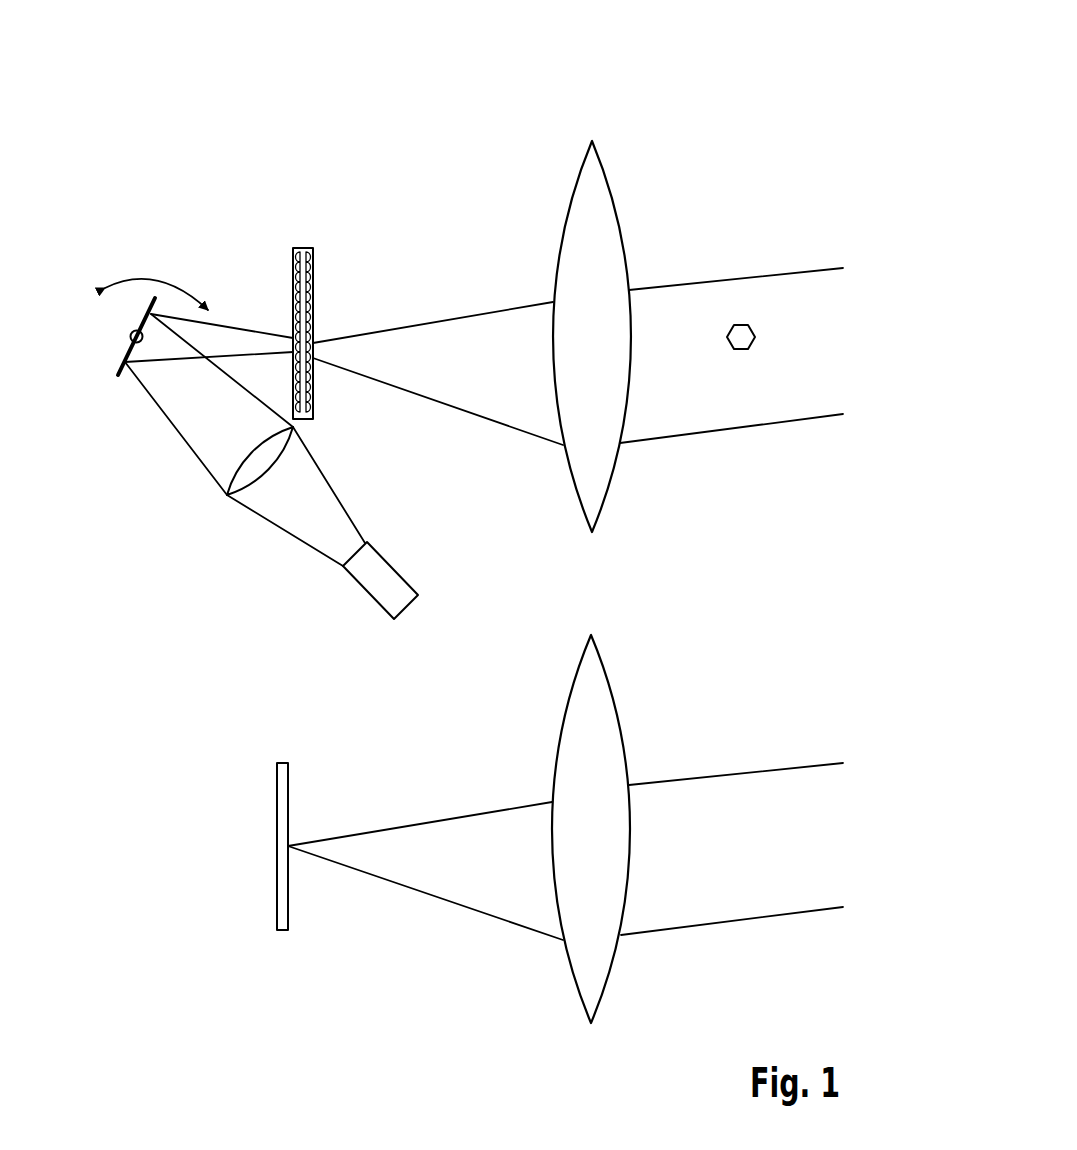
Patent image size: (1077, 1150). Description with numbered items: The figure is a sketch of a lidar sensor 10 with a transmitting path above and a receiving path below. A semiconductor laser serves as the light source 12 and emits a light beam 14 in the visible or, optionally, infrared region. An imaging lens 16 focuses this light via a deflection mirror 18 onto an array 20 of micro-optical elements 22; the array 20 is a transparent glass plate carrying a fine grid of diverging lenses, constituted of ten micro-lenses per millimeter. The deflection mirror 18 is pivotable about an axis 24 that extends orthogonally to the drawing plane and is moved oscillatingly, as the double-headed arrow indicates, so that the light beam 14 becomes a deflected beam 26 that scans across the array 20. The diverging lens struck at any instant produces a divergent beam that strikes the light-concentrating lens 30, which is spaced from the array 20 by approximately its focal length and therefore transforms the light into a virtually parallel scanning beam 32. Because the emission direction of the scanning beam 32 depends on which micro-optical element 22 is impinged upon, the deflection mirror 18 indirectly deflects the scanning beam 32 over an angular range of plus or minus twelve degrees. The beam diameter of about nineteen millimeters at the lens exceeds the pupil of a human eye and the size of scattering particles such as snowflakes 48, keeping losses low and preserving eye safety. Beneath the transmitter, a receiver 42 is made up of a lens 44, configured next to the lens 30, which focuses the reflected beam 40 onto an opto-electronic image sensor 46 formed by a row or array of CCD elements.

The lidar sensor 10 is at (438, 108).
The light source 12 is at (390, 561).
The light beam 14 is at (290, 530).
The imaging lens 16 is at (227, 494).
The deflection mirror 18 is at (118, 372).
The array 20 is at (304, 240).
The micro-optical elements 22 is at (309, 275).
The axis 24 is at (131, 337).
The deflected beam 26 is at (260, 331).
The lens 30 is at (607, 176).
The scanning beam 32 is at (795, 270).
The reflected beam 40 is at (757, 920).
The receiver 42 is at (208, 790).
The lens 44 is at (607, 680).
The image sensor 46 is at (277, 890).
The snowflakes 48 is at (746, 350).